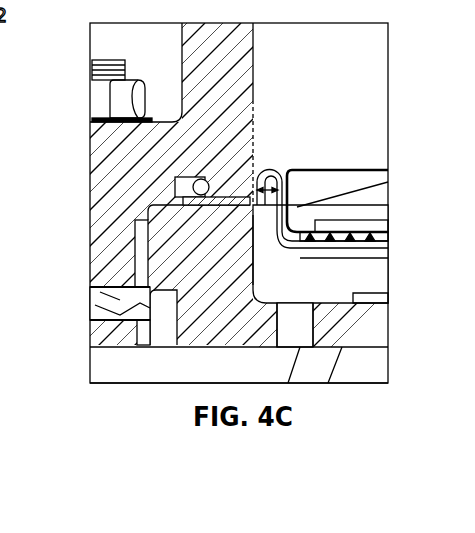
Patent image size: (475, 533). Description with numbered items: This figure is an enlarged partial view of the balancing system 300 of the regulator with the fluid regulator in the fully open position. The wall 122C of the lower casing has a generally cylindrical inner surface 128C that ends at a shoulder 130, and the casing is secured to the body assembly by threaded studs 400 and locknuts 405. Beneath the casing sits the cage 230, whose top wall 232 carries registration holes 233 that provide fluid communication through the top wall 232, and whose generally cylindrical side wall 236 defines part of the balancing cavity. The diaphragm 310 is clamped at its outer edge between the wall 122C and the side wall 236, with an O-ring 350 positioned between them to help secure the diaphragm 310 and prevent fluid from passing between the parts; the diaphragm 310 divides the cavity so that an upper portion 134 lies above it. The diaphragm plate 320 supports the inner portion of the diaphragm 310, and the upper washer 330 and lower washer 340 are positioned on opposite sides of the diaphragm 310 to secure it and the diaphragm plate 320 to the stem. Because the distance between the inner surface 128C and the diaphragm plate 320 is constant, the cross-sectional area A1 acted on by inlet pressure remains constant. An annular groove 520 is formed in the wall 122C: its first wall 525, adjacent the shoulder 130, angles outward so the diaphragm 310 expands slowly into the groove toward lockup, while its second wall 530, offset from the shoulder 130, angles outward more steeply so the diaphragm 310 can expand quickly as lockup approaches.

The wall 122C is at (199, 75).
The inner surface 128C is at (255, 72).
The threaded stud 400 is at (113, 65).
The locknut 405 is at (130, 100).
The second wall 530 is at (140, 130).
The first wall 525 is at (246, 189).
The shoulder 130 is at (250, 194).
The O-ring 350 is at (195, 186).
The cross-sectional area A1 is at (247, 236).
The side wall 236 is at (243, 274).
The cage 230 is at (218, 350).
The annular groove 520 is at (244, 107).
The upper portion 134 is at (372, 145).
The balancing system 300 is at (374, 160).
The diaphragm plate 320 is at (383, 181).
The upper washer 330 is at (383, 220).
The lower washer 340 is at (382, 254).
The diaphragm 310 is at (290, 242).
The top wall 232 is at (362, 330).
The registration hole 233 is at (290, 330).